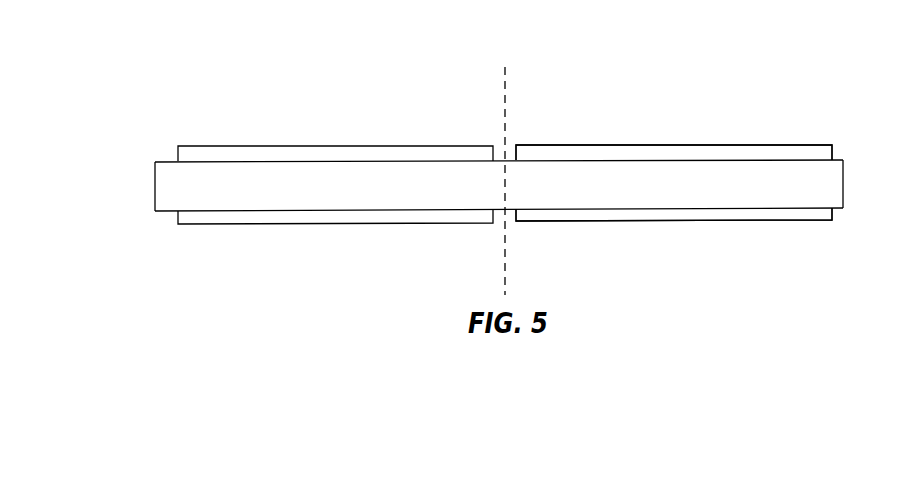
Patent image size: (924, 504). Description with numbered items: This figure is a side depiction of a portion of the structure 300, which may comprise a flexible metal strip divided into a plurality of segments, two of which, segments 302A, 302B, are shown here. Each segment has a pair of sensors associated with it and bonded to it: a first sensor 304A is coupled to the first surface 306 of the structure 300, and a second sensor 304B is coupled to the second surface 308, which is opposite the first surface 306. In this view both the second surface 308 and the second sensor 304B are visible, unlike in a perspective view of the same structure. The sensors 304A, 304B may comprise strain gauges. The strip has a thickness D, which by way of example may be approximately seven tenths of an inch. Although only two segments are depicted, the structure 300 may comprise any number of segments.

The structure 300 is at (236, 64).
The segment 302A is at (388, 96).
The segment 302B is at (627, 80).
The first sensor 304A is at (302, 150).
The second sensor 304B is at (370, 213).
The first surface 306 is at (168, 160).
The second surface 308 is at (170, 212).
The thickness D is at (233, 163).